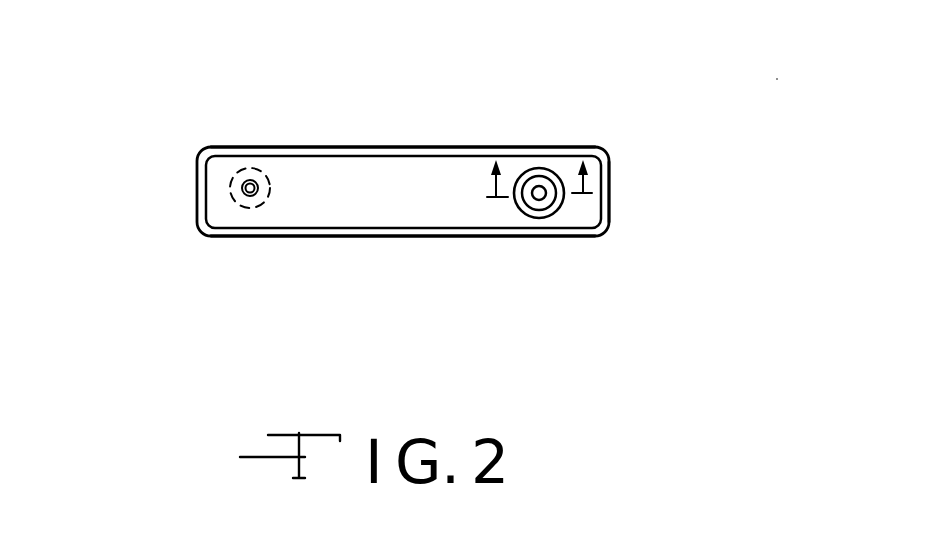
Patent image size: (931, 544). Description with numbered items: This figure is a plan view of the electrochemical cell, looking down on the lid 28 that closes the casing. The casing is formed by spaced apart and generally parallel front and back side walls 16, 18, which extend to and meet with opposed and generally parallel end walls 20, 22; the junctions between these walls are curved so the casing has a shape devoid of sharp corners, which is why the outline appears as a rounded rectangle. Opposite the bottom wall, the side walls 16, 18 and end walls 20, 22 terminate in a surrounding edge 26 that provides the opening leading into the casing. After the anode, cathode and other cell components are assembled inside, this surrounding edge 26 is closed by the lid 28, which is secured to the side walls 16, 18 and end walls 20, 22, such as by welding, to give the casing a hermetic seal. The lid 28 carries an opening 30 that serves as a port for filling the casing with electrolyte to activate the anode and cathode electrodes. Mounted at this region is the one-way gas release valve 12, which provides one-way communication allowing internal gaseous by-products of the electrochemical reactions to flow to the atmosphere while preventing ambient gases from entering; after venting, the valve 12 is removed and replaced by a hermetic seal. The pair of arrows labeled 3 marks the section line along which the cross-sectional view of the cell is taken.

The one-way gas release valve 12 is at (555, 212).
The front side wall 16 is at (443, 237).
The back side wall 18 is at (418, 147).
The end wall 20 is at (197, 188).
The end wall 22 is at (610, 196).
The surrounding edge 26 is at (229, 148).
The lid 28 is at (342, 147).
The opening 30 is at (535, 168).
The section line 3- 3 is at (541, 152).